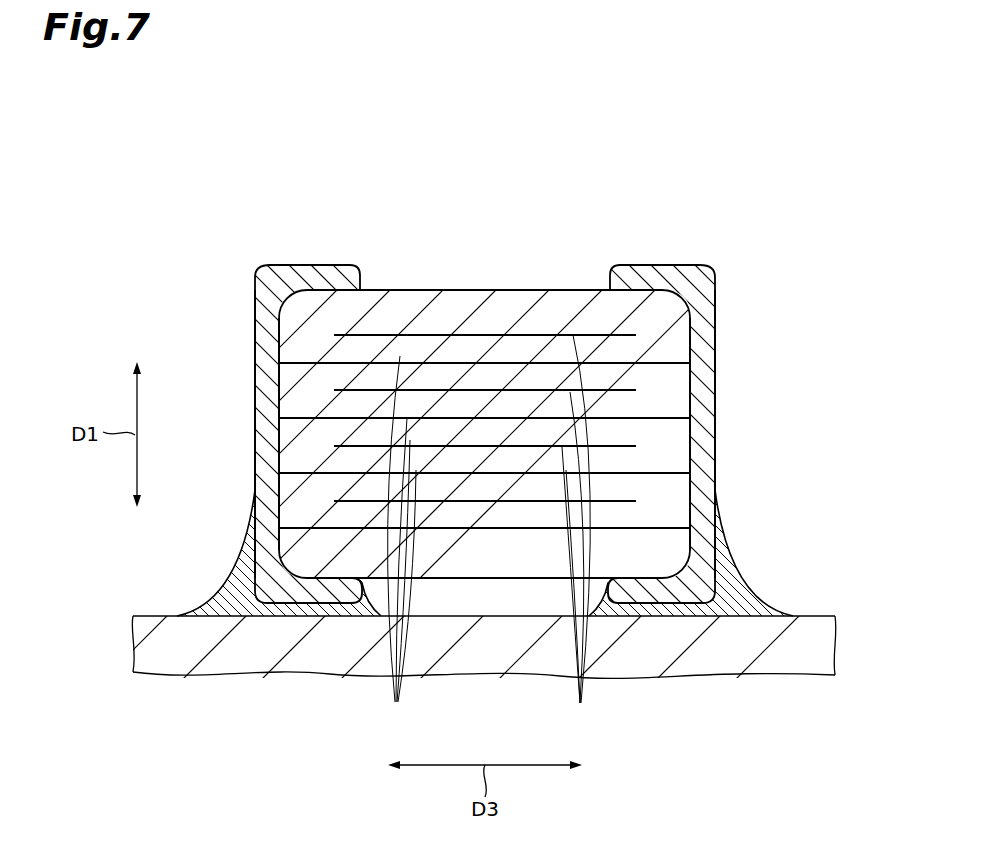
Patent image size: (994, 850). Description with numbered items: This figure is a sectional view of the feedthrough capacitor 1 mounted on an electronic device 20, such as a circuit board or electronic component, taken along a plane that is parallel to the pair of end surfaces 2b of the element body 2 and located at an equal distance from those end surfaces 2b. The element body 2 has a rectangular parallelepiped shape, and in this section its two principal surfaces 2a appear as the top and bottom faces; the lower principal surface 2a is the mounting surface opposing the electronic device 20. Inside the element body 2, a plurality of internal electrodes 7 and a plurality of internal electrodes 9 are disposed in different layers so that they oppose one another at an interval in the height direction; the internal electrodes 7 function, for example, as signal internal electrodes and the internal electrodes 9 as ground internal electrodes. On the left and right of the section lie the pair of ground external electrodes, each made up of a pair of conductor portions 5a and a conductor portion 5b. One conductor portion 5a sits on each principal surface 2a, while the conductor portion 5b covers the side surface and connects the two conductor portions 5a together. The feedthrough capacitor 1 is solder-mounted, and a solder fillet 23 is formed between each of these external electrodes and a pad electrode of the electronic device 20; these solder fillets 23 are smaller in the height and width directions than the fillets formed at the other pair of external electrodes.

The feedthrough capacitor 1 is at (497, 425).
The element body 2 is at (497, 425).
The principal surfaces 2a is at (428, 290).
The end surfaces 2b is at (262, 412).
The conductor portions 5a is at (322, 265).
The conductor portion 5b is at (255, 371).
The internal electrodes 7 is at (576, 534).
The internal electrodes 9 is at (401, 544).
The electronic device 20 is at (163, 662).
The solder fillet 23 is at (225, 580).